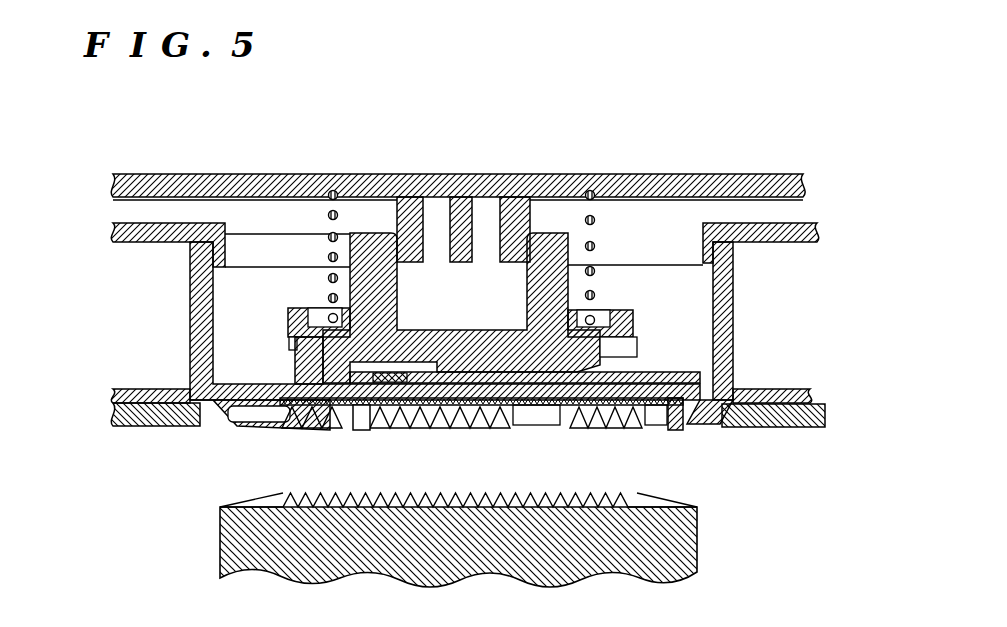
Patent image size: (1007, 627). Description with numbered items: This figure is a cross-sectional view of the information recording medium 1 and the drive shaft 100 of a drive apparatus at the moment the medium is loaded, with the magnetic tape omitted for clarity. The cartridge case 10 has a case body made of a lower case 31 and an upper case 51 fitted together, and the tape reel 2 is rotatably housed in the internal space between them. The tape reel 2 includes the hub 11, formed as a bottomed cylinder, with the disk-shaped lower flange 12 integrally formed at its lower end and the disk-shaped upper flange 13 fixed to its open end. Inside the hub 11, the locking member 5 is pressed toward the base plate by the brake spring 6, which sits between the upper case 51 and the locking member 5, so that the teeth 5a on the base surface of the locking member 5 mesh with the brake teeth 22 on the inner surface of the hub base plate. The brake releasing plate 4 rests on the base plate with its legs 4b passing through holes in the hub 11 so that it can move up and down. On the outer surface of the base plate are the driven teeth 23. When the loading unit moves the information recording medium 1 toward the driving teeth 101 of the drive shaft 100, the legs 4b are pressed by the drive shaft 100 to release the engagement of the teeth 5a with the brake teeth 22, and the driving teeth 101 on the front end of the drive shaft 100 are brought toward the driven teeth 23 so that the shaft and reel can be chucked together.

The information recording medium 1 is at (464, 141).
The tape reel 2 is at (168, 314).
The brake releasing plate 4 is at (650, 372).
The legs 4b is at (362, 432).
The locking member 5 is at (303, 308).
The teeth 5a is at (293, 341).
The brake spring 6 is at (336, 211).
The cartridge case 10 is at (710, 168).
The hub 11 is at (735, 320).
The lower flange 12 is at (158, 389).
The upper flange 13 is at (148, 243).
The brake teeth 22 is at (294, 370).
The driven teeth 23 is at (236, 431).
The lower case 31 is at (140, 428).
The upper case 51 is at (641, 174).
The drive shaft 100 is at (722, 547).
The driving teeth 101 is at (658, 500).